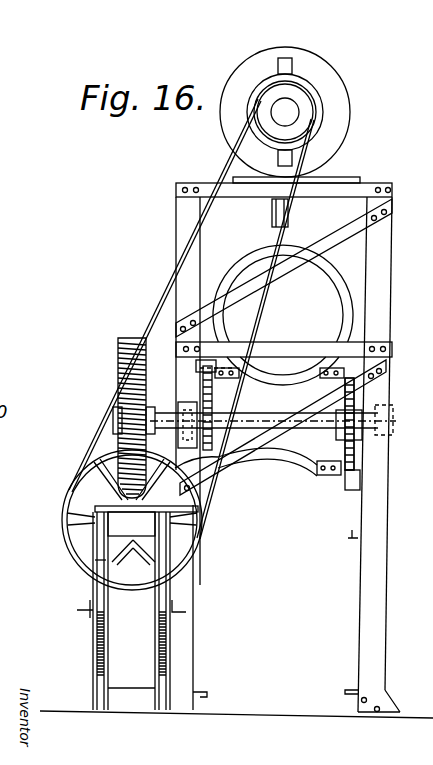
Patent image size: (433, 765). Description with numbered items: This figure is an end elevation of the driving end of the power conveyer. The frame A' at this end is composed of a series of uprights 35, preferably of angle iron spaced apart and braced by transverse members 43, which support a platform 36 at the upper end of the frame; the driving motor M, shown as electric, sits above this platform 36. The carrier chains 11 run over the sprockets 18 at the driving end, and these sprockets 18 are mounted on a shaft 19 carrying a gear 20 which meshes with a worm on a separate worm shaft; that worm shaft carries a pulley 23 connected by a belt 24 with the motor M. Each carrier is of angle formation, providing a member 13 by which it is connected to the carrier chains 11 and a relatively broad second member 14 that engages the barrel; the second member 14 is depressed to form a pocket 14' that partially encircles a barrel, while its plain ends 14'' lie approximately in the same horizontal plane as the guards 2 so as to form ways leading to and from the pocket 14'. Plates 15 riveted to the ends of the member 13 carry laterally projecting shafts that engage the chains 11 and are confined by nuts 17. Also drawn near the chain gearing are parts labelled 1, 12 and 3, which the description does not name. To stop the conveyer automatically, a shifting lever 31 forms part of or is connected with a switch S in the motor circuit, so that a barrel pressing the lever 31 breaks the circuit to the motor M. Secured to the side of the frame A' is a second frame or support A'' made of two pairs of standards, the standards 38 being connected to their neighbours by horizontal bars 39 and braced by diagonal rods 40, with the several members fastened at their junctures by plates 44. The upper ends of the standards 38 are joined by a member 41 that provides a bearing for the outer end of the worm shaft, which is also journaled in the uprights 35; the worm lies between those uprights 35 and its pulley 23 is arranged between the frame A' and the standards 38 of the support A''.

The driving motor M is at (292, 115).
The platform 36 is at (225, 193).
The uprights 35 is at (180, 235).
The plates 15 is at (333, 340).
The guards 2 is at (355, 362).
The second member 14 is at (283, 315).
The ends of the second member 14'' is at (283, 315).
The pocket 14' is at (220, 475).
The shifting lever 31 is at (272, 210).
The switch S is at (306, 223).
The frame A' is at (408, 276).
The belt 24 is at (166, 292).
The gear 20 is at (120, 358).
The bearing plate 1 is at (198, 387).
The nuts 17 is at (197, 370).
The sprockets 18 is at (212, 388).
The member 13 is at (300, 372).
The arc segment 12 is at (276, 376).
The carrier chains 11 is at (352, 455).
The shaft 19 is at (315, 432).
The chain bracket 3 is at (350, 490).
The transverse members 43 is at (352, 547).
The pulley 23 is at (73, 484).
The member 41 is at (98, 503).
The standards 38 is at (100, 566).
The plates 44 is at (95, 556).
The horizontal bars 39 is at (91, 613).
The diagonal rods 40 is at (168, 645).
The support A'' is at (128, 636).